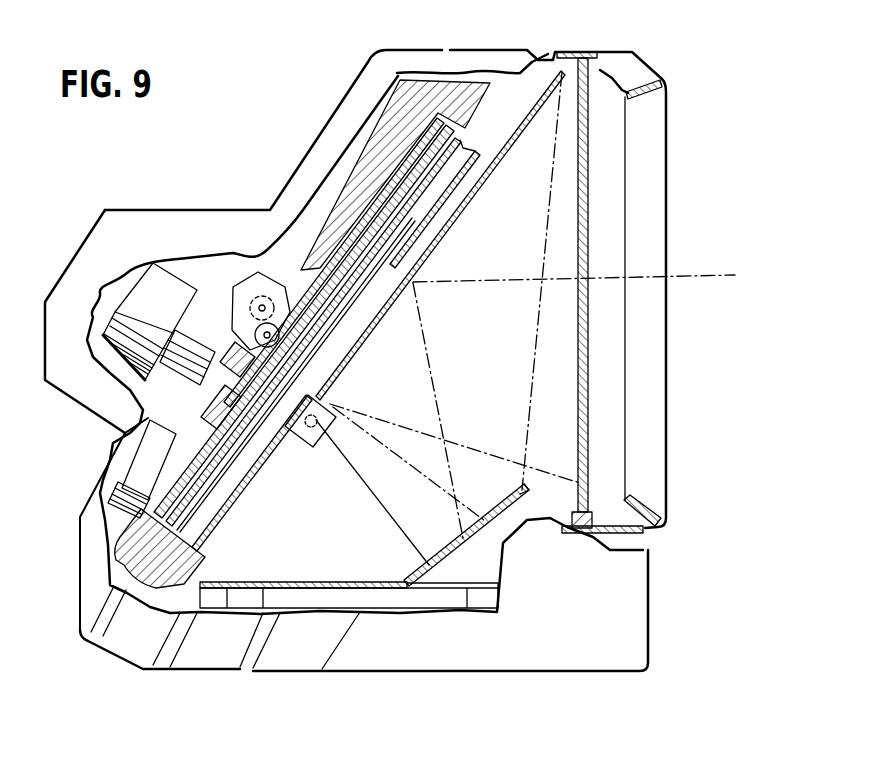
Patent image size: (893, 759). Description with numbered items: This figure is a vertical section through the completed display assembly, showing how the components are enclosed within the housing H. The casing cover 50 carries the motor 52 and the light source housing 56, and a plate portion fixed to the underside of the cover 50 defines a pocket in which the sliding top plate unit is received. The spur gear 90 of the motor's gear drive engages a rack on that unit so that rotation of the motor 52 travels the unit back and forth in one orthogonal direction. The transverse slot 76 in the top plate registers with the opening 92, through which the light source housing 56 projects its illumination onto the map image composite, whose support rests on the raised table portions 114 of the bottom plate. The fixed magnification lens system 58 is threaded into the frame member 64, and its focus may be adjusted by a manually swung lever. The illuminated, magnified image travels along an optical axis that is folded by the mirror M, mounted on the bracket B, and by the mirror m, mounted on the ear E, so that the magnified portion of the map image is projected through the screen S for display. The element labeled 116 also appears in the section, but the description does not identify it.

The housing H is at (502, 41).
The screen S is at (584, 222).
The mirror M is at (441, 232).
The bracket B is at (478, 155).
The ear E is at (449, 557).
The mirror m is at (492, 500).
The casing cover 50 is at (355, 178).
The raised table portions 114 is at (378, 153).
The frame member 64 is at (259, 487).
The transverse slot 76 is at (213, 402).
The fixed magnification lens system 58 is at (299, 449).
The opening 92 is at (233, 345).
The light source housing 56 is at (170, 263).
The motor 52 is at (147, 447).
The spur gear 90 is at (562, 305).
The light beam 116 is at (448, 455).